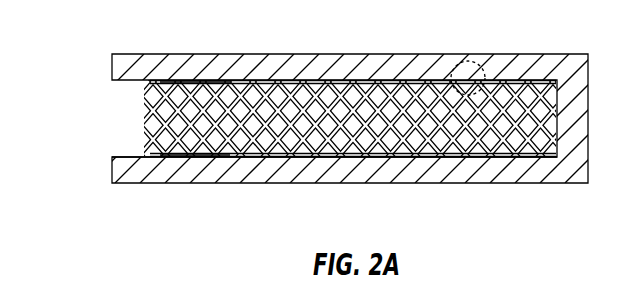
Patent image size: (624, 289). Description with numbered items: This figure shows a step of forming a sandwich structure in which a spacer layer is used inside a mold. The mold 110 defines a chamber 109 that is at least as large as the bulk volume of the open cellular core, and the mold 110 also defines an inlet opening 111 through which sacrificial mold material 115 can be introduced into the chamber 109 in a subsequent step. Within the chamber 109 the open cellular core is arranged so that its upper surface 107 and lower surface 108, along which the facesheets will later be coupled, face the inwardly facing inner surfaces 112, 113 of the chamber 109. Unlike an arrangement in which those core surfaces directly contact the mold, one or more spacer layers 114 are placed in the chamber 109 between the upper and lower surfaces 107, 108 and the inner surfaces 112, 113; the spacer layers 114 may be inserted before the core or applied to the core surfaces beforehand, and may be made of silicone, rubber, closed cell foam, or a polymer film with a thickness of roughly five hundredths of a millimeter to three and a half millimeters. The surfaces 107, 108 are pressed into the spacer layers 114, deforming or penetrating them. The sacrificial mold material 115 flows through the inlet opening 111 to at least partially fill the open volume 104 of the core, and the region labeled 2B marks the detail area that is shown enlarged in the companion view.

The open volume 104 is at (315, 120).
The upper surface 107 is at (493, 80).
The lower surface 108 is at (490, 158).
The chamber 109 is at (315, 119).
The mold 110 is at (305, 67).
The inlet opening 111 is at (113, 132).
The inner surface 112 is at (193, 83).
The inner surface 113 is at (193, 158).
The spacer layer 114 is at (245, 83).
The sacrificial mold material 115 is at (338, 92).
The detail region shown in FIG. 2B is at (463, 63).